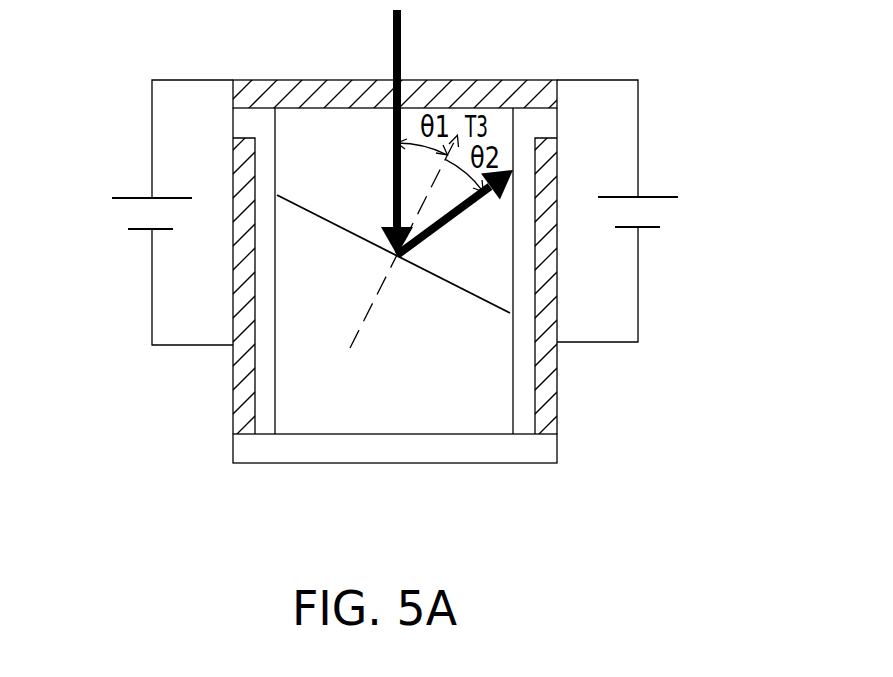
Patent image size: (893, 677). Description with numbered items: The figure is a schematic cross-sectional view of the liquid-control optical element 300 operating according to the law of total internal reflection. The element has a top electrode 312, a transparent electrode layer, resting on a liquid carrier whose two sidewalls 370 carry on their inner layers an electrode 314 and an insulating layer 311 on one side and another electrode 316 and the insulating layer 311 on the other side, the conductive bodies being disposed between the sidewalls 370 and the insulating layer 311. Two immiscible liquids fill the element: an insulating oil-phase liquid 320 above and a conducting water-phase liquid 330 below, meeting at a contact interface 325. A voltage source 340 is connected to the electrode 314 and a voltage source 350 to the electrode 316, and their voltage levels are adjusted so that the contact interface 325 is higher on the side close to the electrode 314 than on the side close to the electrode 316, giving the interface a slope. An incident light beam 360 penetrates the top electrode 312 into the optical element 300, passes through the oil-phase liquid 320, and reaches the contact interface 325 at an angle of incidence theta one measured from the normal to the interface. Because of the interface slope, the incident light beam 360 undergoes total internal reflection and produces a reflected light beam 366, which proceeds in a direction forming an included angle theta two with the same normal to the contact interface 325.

The liquid-control optical element 300 is at (663, 512).
The insulating layer 311 is at (537, 123).
The top electrode 312 is at (273, 95).
The electrode 314 is at (235, 395).
The electrode 316 is at (545, 393).
The oil-phase liquid 320 is at (337, 148).
The contact interface 325 is at (438, 278).
The water-phase liquid 330 is at (338, 420).
The voltage source 340 is at (120, 177).
The voltage source 350 is at (670, 173).
The incident light beam 360 is at (390, 68).
The reflected light beam 366 is at (458, 207).
The sidewalls 370 is at (231, 366).